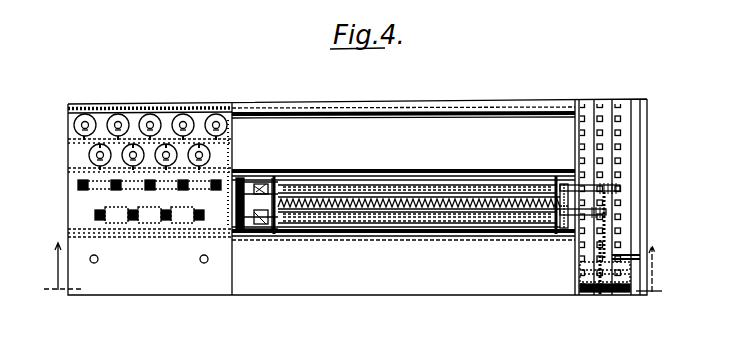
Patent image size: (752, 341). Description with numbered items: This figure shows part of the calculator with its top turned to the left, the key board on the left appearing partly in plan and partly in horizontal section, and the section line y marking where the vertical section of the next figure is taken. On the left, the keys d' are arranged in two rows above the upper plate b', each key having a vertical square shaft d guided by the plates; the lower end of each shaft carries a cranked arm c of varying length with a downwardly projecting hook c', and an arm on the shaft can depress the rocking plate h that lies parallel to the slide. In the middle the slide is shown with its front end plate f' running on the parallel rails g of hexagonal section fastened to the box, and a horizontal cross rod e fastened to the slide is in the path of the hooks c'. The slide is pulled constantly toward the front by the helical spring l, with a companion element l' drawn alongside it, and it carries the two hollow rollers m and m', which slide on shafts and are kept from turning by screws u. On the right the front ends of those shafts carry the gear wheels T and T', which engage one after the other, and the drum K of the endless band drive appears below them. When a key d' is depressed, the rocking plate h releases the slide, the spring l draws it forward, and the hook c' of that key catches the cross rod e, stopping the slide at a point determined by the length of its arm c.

The key d' is at (150, 106).
The vertical square shaft d is at (140, 183).
The cranked arm c is at (149, 201).
The upper horizontal plate b' is at (149, 267).
The rocking plate h is at (233, 144).
The hook c' is at (253, 190).
The cross rod e is at (240, 236).
The front end plate f' is at (415, 209).
The rail g is at (328, 237).
The roller m is at (419, 211).
The roller m' is at (417, 171).
The helical spring l is at (417, 166).
The lower rod l' is at (417, 182).
The screw u is at (553, 180).
The gear wheel T' is at (617, 187).
The gear wheel T is at (616, 226).
The drum K is at (600, 290).
The section line y- y is at (349, 276).